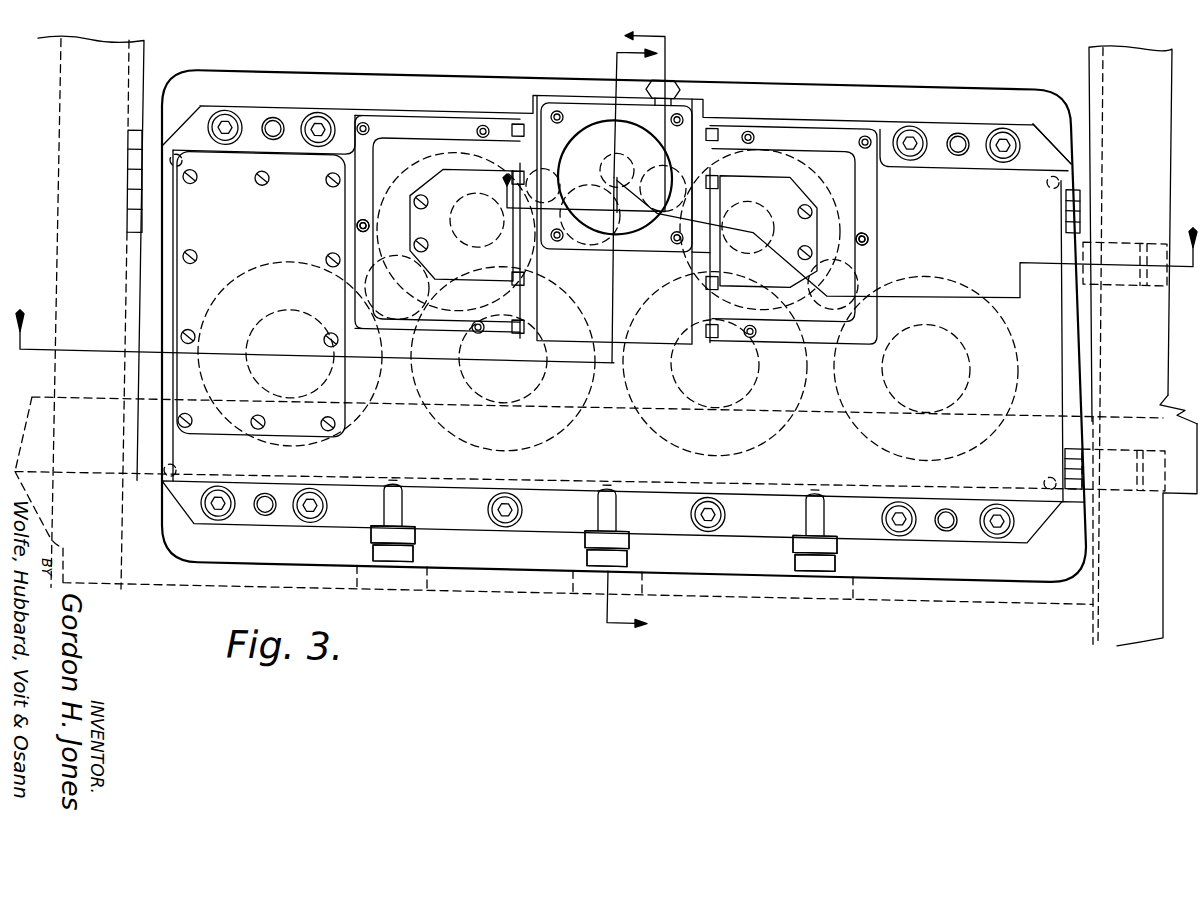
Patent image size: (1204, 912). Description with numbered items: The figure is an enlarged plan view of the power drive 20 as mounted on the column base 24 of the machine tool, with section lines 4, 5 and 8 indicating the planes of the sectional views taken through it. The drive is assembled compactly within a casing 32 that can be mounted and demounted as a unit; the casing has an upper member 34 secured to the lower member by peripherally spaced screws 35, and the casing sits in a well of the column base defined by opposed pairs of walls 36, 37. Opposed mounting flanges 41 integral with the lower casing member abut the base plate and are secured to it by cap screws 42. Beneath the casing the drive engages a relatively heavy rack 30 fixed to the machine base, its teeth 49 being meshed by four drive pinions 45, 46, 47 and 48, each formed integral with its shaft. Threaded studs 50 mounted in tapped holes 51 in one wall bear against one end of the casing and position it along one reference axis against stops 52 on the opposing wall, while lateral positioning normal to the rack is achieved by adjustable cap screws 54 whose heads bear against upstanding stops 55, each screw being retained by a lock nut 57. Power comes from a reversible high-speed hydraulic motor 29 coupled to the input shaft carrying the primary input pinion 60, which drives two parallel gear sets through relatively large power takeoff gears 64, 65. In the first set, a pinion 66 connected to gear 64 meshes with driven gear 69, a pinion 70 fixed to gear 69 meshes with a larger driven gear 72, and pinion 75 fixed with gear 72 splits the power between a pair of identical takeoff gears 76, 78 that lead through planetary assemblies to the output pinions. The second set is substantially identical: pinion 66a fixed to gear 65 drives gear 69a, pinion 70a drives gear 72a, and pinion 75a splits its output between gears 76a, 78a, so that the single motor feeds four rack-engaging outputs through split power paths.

The section line 4- 4 is at (603, 292).
The section line 5- 5 is at (612, 339).
The section line 8- 8 is at (604, 144).
The power drive 20 is at (887, 67).
The column base 24 is at (150, 74).
The hydraulic motor 29 is at (644, 131).
The rack 30 is at (1170, 480).
The casing 32 is at (848, 107).
The upper member 34 is at (970, 178).
The screws 35 is at (178, 162).
The walls 36 is at (58, 200).
The walls 37 is at (497, 600).
The mounting flanges 41 is at (293, 117).
The cap screws 42 is at (325, 124).
The drive pinion 45 is at (290, 312).
The drive pinion 46 is at (462, 385).
The drive pinion 47 is at (676, 381).
The drive pinion 48 is at (966, 345).
The teeth 49 is at (1183, 395).
The threaded studs 50 is at (1083, 239).
The tapped holes 51 is at (1120, 265).
The stops 52 is at (143, 196).
The cap screws 54 is at (415, 558).
The upstanding stops 55 is at (360, 574).
The lock nut 57 is at (372, 545).
The primary input pinion 60 is at (606, 182).
The power takeoff gear 64 is at (604, 256).
The power takeoff gear 65 is at (671, 274).
The pinion 66 is at (574, 256).
The pinion 66a is at (708, 118).
The driven gear 69 is at (462, 170).
The driven gear 69a is at (770, 161).
The pinion 70 is at (479, 204).
The pinion 70a is at (773, 223).
The driven gear 72 is at (352, 249).
The driven gear 72a is at (858, 216).
The pinion 75 is at (397, 274).
The pinion 75a is at (834, 271).
The takeoff gear 76 is at (222, 304).
The takeoff gear 76a is at (675, 445).
The takeoff gear 78 is at (455, 448).
The takeoff gear 78a is at (883, 445).